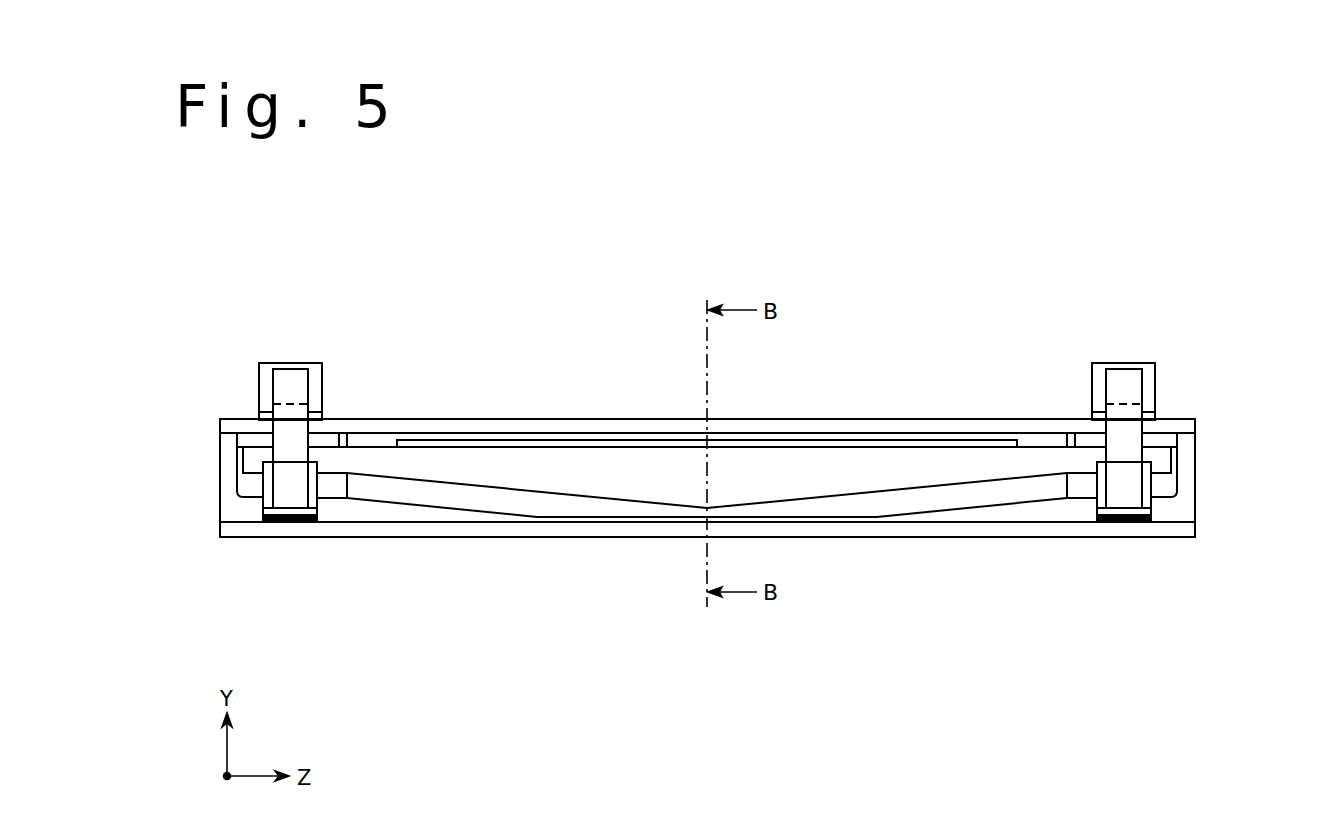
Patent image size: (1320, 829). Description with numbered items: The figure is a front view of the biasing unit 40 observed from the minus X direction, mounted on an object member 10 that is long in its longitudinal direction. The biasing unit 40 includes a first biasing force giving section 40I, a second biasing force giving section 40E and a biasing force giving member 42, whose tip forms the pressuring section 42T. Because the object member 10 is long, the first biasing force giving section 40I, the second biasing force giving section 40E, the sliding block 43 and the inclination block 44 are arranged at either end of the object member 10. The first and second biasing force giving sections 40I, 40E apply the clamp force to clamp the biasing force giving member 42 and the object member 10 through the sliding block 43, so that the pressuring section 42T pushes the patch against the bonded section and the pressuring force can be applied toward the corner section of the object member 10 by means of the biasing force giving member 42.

The object member 10 is at (902, 427).
The biasing unit 40 is at (707, 370).
The first biasing force giving section 40I is at (343, 275).
The second biasing force giving section 40E is at (315, 373).
The biasing force giving member 42 is at (765, 485).
The pressuring section 42T is at (253, 443).
The sliding block 43 is at (269, 498).
The inclination block 44 is at (312, 521).